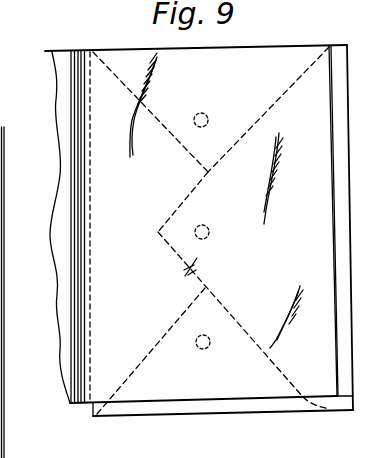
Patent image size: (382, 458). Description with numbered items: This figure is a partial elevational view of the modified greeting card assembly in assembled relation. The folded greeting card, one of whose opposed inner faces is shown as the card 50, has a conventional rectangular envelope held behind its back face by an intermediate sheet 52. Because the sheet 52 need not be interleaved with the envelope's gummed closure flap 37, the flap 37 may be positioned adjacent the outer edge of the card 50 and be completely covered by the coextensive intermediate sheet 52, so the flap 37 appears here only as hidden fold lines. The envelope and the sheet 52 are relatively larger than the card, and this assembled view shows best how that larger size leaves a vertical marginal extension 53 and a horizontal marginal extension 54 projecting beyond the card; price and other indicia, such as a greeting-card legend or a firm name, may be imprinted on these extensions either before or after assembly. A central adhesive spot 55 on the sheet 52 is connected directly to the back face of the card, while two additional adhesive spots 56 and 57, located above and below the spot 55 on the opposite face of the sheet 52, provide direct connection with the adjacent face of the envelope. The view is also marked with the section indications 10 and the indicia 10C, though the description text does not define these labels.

The greeting card 10 is at (194, 37).
The inner face 50 is at (57, 62).
The gummed closure flap 37 is at (136, 63).
The horizontal marginal extension 54 is at (170, 414).
The vertical marginal extension 53 is at (348, 44).
The adhesive spot 56 is at (208, 119).
The central adhesive spot 55 is at (209, 232).
The adhesive spot 57 is at (210, 344).
The intermediate sheet 52 is at (289, 414).
The card indicia 10C is at (343, 403).